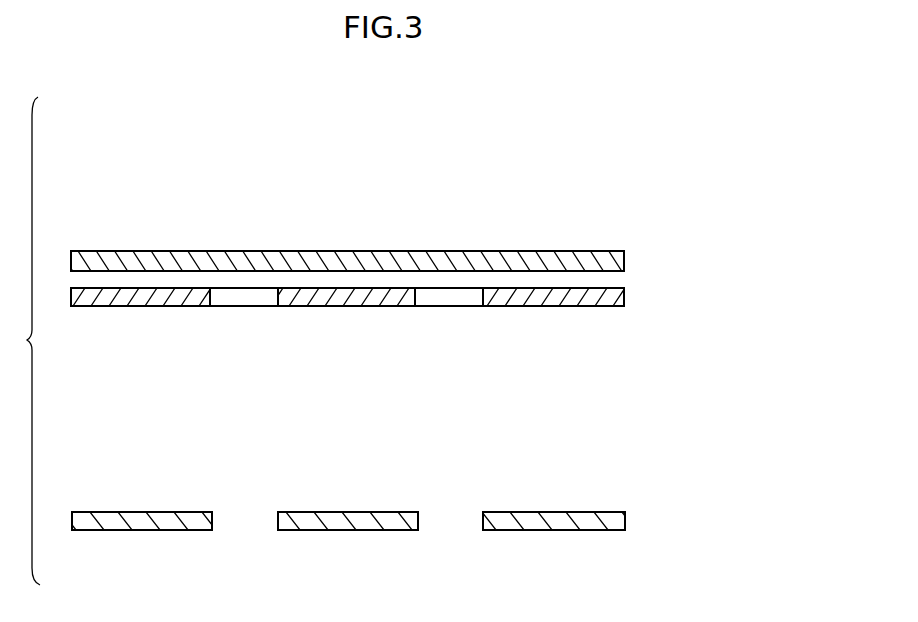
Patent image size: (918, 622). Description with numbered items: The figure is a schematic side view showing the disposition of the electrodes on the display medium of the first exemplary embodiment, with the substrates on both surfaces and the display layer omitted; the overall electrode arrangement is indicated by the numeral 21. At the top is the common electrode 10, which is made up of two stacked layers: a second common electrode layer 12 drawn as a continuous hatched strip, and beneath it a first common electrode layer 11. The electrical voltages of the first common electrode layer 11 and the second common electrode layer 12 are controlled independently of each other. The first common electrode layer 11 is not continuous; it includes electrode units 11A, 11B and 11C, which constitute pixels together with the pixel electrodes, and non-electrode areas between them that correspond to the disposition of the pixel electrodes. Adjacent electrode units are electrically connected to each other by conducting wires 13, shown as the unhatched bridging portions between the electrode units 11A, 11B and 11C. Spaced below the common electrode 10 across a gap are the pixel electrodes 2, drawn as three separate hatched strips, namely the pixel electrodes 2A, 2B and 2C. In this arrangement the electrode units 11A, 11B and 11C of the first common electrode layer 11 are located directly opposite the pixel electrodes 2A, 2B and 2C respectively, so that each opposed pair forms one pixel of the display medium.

The laminated body 21 is at (637, 162).
The common electrode 10 is at (727, 225).
The second common electrode layer 12 is at (625, 258).
The first common electrode layer 11 is at (625, 298).
The electrode unit 11A is at (136, 298).
The electrode unit 11B is at (343, 298).
The electrode unit 11C is at (551, 298).
The conducting wire 13 is at (238, 298).
The pixel electrodes 2 is at (627, 521).
The pixel electrode 2A is at (140, 520).
The pixel electrode 2B is at (348, 520).
The pixel electrode 2C is at (554, 520).